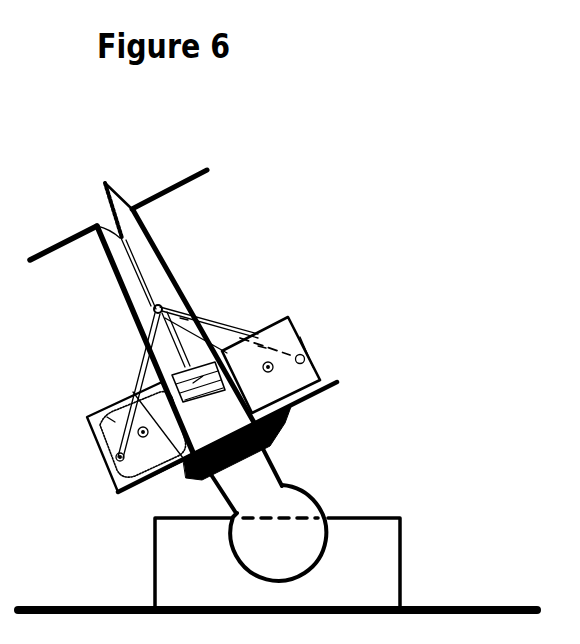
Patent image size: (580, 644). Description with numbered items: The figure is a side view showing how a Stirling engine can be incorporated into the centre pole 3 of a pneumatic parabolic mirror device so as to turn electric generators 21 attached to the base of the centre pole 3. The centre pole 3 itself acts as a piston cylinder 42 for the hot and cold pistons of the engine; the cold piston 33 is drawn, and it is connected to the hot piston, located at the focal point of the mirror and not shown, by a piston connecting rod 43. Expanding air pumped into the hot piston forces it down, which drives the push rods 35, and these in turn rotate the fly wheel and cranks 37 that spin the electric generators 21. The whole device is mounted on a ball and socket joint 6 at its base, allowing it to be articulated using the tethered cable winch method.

The centre pole 3 is at (143, 223).
The piston connecting rod 43 is at (145, 273).
The electric generator 21 is at (289, 316).
The push rods 35 is at (140, 372).
The fly wheel and cranks 37 is at (97, 416).
The piston cylinder 42 is at (279, 412).
The cold piston 33 is at (119, 489).
The ball and socket joint 6 is at (300, 508).